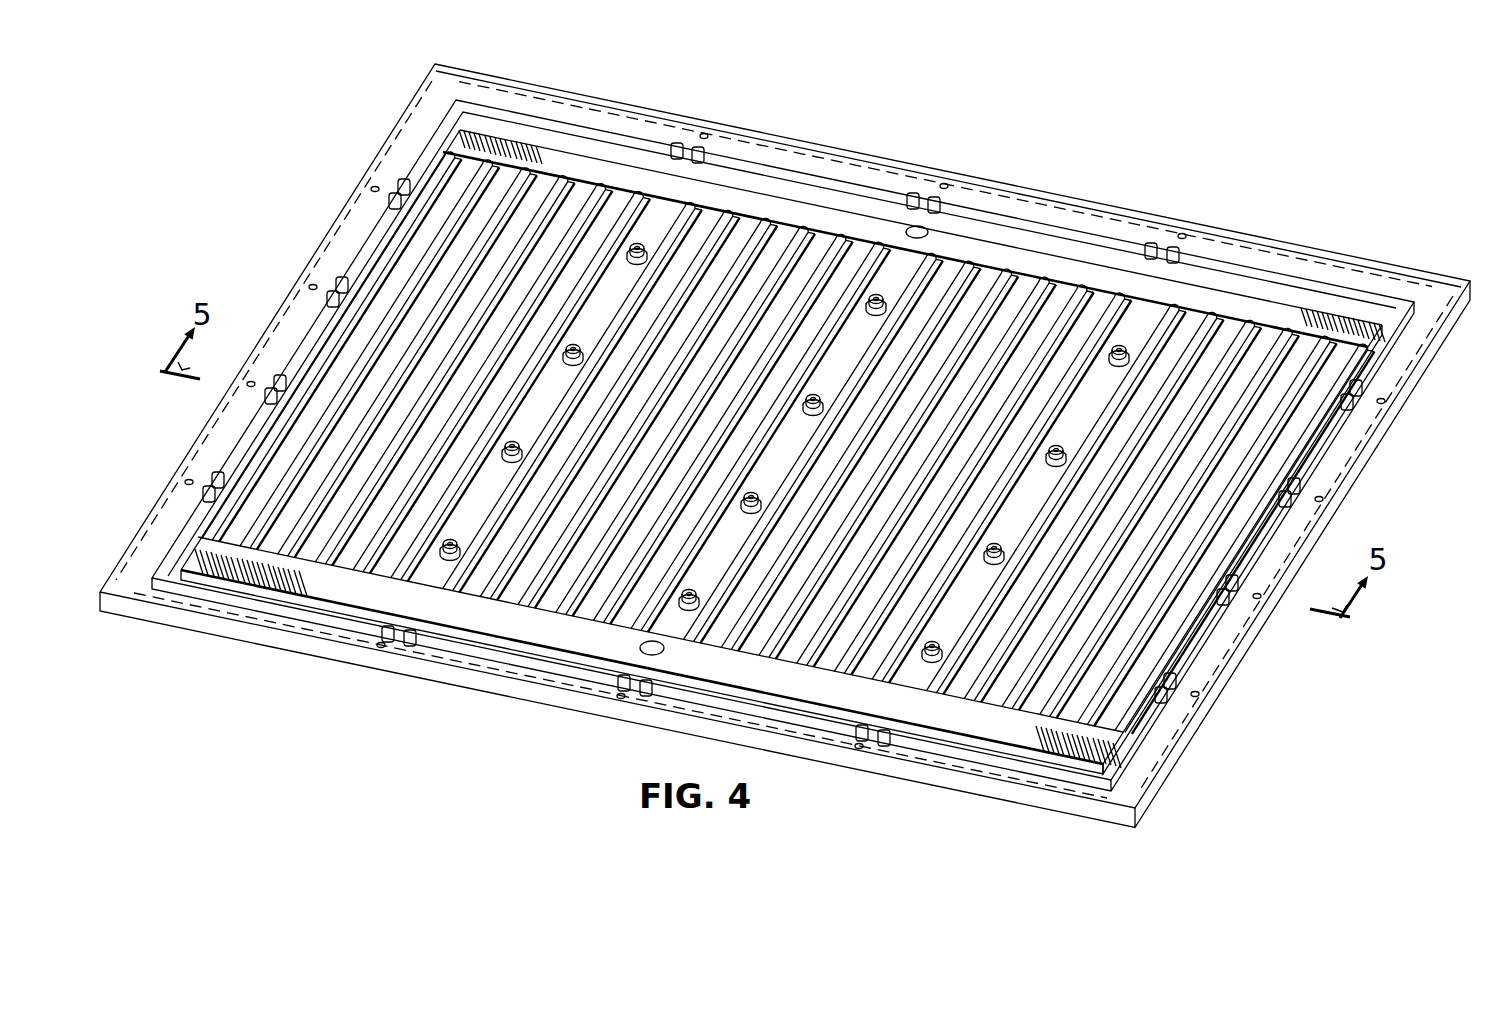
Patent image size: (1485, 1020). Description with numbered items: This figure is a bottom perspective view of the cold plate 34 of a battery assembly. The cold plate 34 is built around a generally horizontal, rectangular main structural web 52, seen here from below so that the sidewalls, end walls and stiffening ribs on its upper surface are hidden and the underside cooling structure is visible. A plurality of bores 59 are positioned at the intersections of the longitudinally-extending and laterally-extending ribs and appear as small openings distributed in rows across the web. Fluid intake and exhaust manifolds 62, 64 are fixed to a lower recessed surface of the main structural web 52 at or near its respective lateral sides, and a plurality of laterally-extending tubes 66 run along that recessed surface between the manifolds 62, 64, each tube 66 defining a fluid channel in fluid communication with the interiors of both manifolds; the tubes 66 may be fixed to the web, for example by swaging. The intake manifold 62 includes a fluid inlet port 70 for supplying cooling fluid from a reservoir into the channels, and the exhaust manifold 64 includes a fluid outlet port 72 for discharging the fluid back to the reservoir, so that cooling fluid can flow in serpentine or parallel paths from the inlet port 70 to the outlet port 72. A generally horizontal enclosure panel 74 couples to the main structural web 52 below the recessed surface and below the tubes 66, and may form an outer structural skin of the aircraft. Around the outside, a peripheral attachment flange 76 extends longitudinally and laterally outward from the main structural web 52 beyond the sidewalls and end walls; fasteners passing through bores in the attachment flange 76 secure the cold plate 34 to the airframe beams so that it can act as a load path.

The cold plate 34 is at (1110, 145).
The main structural web 52 is at (762, 262).
The bores 59 is at (648, 236).
The fluid intake manifold 62 is at (340, 590).
The fluid exhaust manifold 64 is at (1240, 300).
The laterally-extending tubes 66 is at (1300, 443).
The fluid inlet port 70 is at (643, 650).
The fluid outlet port 72 is at (918, 226).
The enclosure panel 74 is at (1350, 272).
The peripheral attachment flange 76 is at (208, 628).